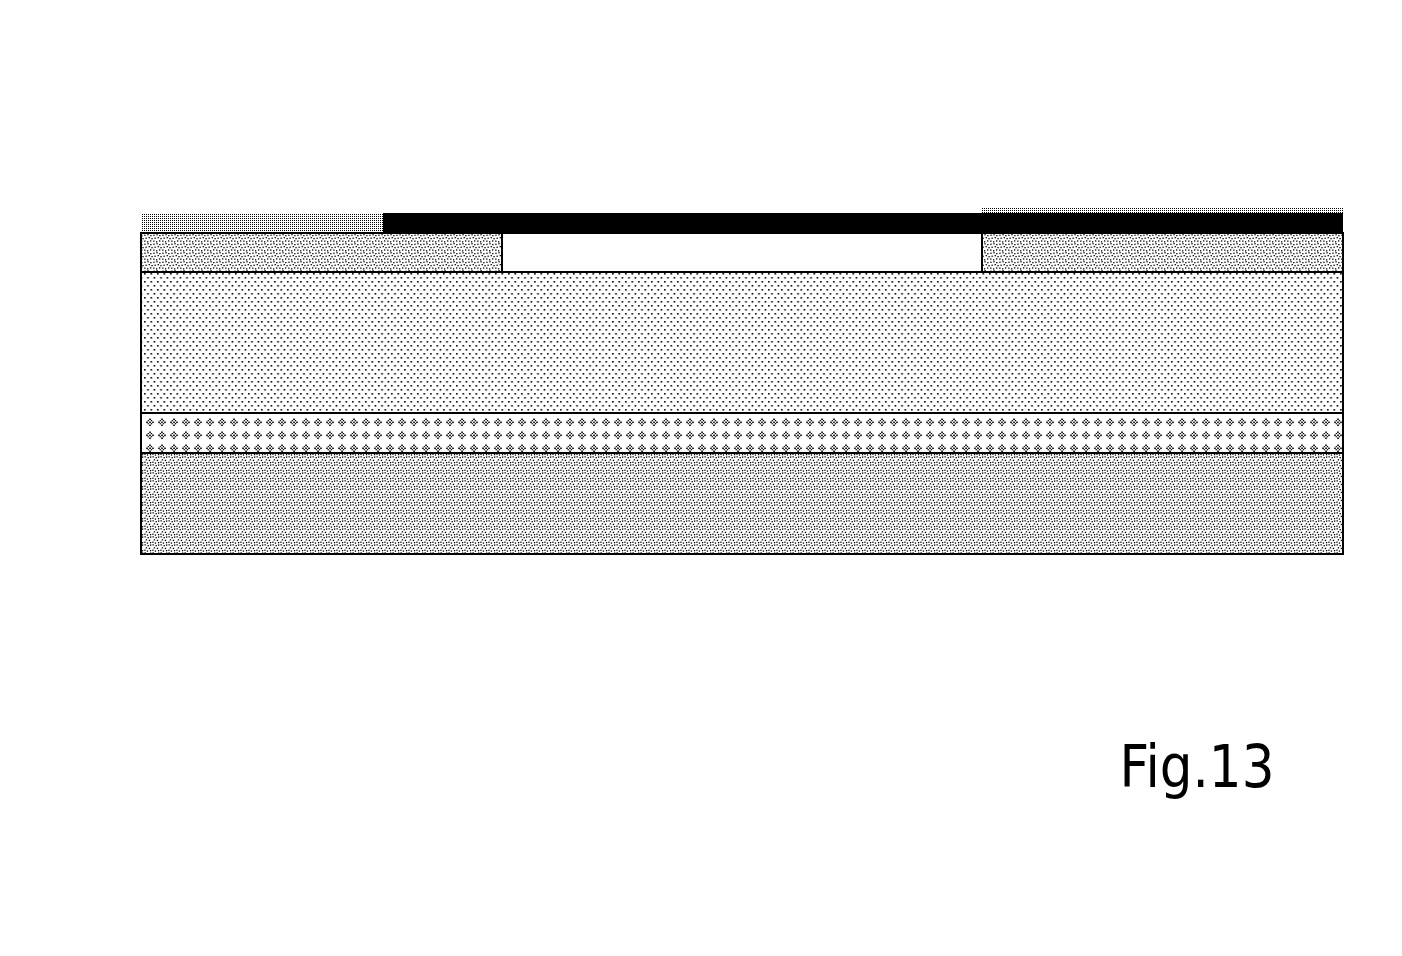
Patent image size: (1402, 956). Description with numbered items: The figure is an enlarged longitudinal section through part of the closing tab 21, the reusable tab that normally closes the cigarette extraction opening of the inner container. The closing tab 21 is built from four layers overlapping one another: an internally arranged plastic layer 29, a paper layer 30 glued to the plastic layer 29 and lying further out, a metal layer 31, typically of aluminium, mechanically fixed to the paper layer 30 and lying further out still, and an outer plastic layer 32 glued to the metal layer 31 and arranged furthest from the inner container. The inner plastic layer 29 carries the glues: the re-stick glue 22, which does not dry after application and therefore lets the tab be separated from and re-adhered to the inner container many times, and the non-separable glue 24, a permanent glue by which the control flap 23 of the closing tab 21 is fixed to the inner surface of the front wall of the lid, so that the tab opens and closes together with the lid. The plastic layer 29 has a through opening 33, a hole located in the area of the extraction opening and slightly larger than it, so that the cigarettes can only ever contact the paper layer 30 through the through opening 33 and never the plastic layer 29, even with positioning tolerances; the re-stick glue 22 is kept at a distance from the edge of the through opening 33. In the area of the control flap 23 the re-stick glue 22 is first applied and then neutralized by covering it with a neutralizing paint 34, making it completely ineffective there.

The closing tab 21 is at (410, 617).
The re-stick glue 22 is at (886, 225).
The control flap 23 is at (1287, 171).
The non-separable glue 24 is at (281, 218).
The plastic layer 29 is at (185, 249).
The paper layer 30 is at (1294, 345).
The metal layer 31 is at (187, 435).
The plastic layer 32 is at (1286, 516).
The through opening 33 is at (507, 255).
The neutralizing paint 34 is at (1196, 210).